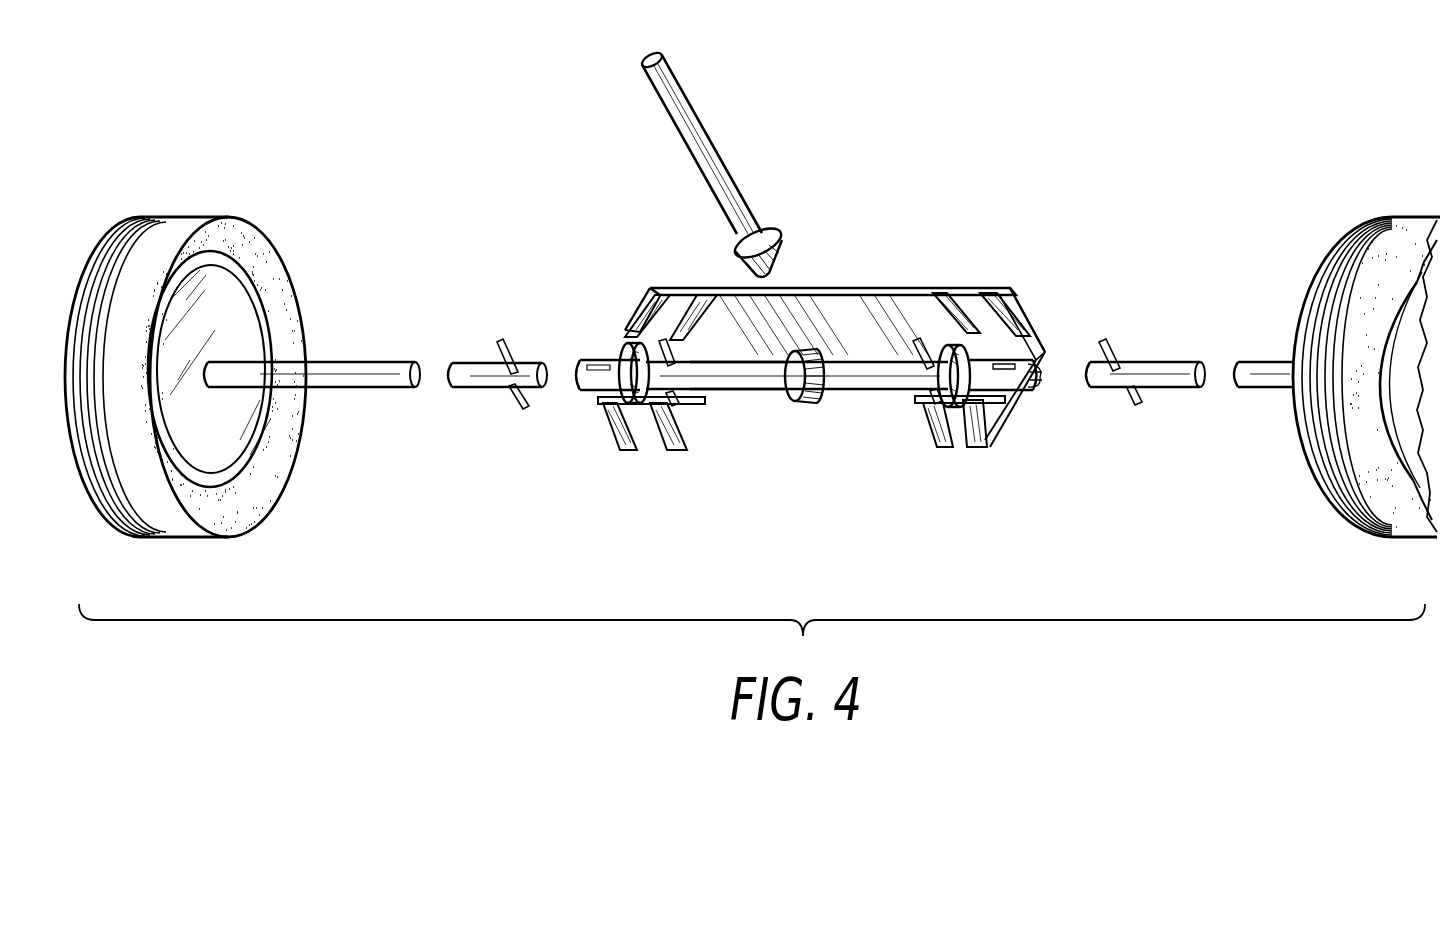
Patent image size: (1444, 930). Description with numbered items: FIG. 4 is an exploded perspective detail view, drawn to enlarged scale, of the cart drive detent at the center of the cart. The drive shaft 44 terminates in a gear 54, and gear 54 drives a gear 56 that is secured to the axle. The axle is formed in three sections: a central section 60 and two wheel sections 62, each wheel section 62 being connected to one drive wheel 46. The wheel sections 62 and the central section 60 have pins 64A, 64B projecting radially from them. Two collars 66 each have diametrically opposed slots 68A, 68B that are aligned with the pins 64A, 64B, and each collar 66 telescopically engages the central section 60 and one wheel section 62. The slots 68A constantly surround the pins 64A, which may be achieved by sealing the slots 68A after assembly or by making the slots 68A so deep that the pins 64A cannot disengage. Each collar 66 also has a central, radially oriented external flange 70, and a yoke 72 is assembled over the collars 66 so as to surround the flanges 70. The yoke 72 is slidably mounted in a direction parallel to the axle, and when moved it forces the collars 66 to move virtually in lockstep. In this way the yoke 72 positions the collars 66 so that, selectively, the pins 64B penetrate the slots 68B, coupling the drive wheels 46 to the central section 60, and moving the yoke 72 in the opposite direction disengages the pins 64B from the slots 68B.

The drive shaft 44 is at (685, 80).
The drive wheel 46 is at (292, 440).
The gear 54 is at (785, 248).
The gear 56 is at (816, 350).
The central section 60 is at (769, 368).
The wheel section 62 is at (380, 360).
The pin 64A is at (925, 375).
The pin 64B is at (494, 357).
The collar 66 is at (614, 452).
The slot 68A is at (910, 368).
The slot 68B is at (585, 365).
The external flange 70 is at (633, 343).
The yoke 72 is at (925, 290).